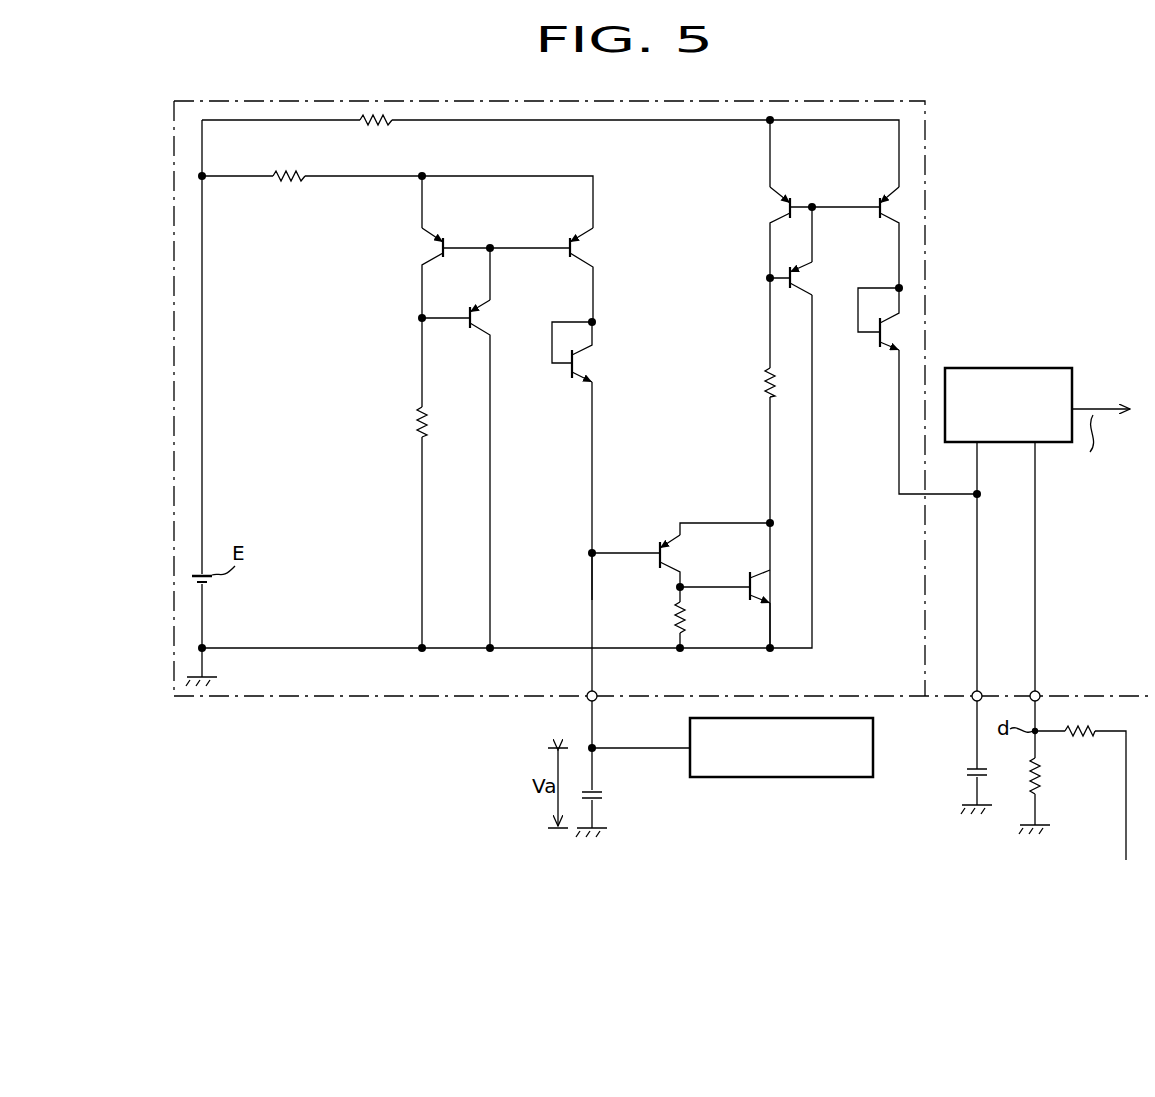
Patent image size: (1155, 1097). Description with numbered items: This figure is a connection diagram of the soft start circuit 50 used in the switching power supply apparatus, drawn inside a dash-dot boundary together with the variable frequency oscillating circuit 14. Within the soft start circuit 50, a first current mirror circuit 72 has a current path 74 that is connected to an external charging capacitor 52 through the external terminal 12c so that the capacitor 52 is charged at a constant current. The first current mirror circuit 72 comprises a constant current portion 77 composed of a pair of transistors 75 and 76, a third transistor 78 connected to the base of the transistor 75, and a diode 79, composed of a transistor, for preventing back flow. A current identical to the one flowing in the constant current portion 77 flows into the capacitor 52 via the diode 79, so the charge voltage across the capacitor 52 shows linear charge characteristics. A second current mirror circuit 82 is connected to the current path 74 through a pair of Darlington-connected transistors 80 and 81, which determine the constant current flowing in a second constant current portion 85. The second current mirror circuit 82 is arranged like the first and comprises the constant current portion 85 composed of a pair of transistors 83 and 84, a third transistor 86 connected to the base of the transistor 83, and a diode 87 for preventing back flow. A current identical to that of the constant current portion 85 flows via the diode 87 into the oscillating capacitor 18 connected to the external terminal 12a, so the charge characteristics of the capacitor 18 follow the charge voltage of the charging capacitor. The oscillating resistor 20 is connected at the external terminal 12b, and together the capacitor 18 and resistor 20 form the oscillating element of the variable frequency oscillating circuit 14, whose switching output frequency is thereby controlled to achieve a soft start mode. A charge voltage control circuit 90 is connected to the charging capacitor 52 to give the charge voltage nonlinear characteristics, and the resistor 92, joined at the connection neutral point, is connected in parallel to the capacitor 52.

The soft start circuit 50 is at (925, 240).
The first current mirror circuit 72 is at (543, 431).
The constant current portion 77 is at (464, 293).
The transistor 75 is at (440, 236).
The transistor 76 is at (476, 330).
The third transistor 78 is at (568, 236).
The diode 79 is at (590, 355).
The transistor 80 is at (672, 538).
The transistor 81 is at (758, 578).
The current path 74 is at (592, 600).
The second current mirror circuit 82 is at (863, 268).
The second constant current portion 85 is at (803, 252).
The transistor 83 is at (790, 200).
The transistor 84 is at (790, 290).
The third transistor 86 is at (882, 200).
The diode 87 is at (878, 350).
The variable frequency oscillating circuit 14 is at (985, 366).
The external terminal 12a is at (981, 691).
The external terminal 12b is at (1039, 691).
The external terminal 12c is at (596, 691).
The charge voltage control circuit 90 is at (873, 745).
The charging capacitor 52 is at (604, 792).
The capacitor 18 is at (970, 762).
The resistor 20 is at (1043, 782).
The resistor 92 is at (1075, 724).